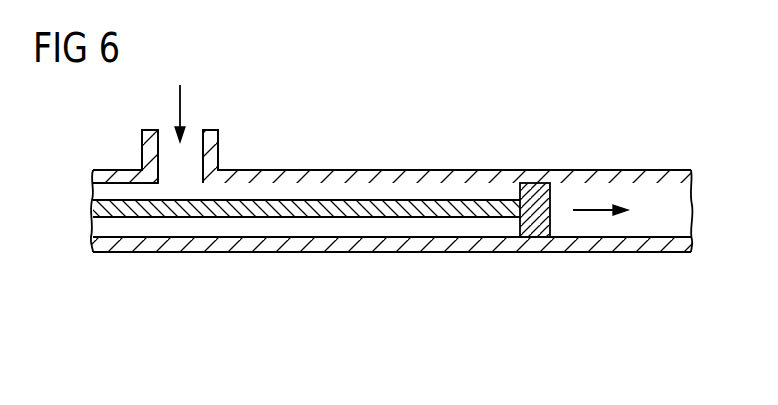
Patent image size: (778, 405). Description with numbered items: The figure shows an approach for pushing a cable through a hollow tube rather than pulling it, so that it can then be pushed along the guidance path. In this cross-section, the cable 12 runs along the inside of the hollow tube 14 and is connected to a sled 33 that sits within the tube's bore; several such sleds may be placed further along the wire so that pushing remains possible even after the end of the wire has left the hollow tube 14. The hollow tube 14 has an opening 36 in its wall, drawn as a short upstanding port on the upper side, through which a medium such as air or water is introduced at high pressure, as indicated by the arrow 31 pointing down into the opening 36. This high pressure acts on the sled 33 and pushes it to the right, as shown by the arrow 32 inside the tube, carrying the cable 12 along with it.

The hollow tube 14 is at (643, 177).
The opening 36 is at (178, 165).
The cable 12 is at (437, 202).
The sled 33 is at (533, 223).
The arrow 32 is at (600, 213).
The arrow 31 is at (180, 103).